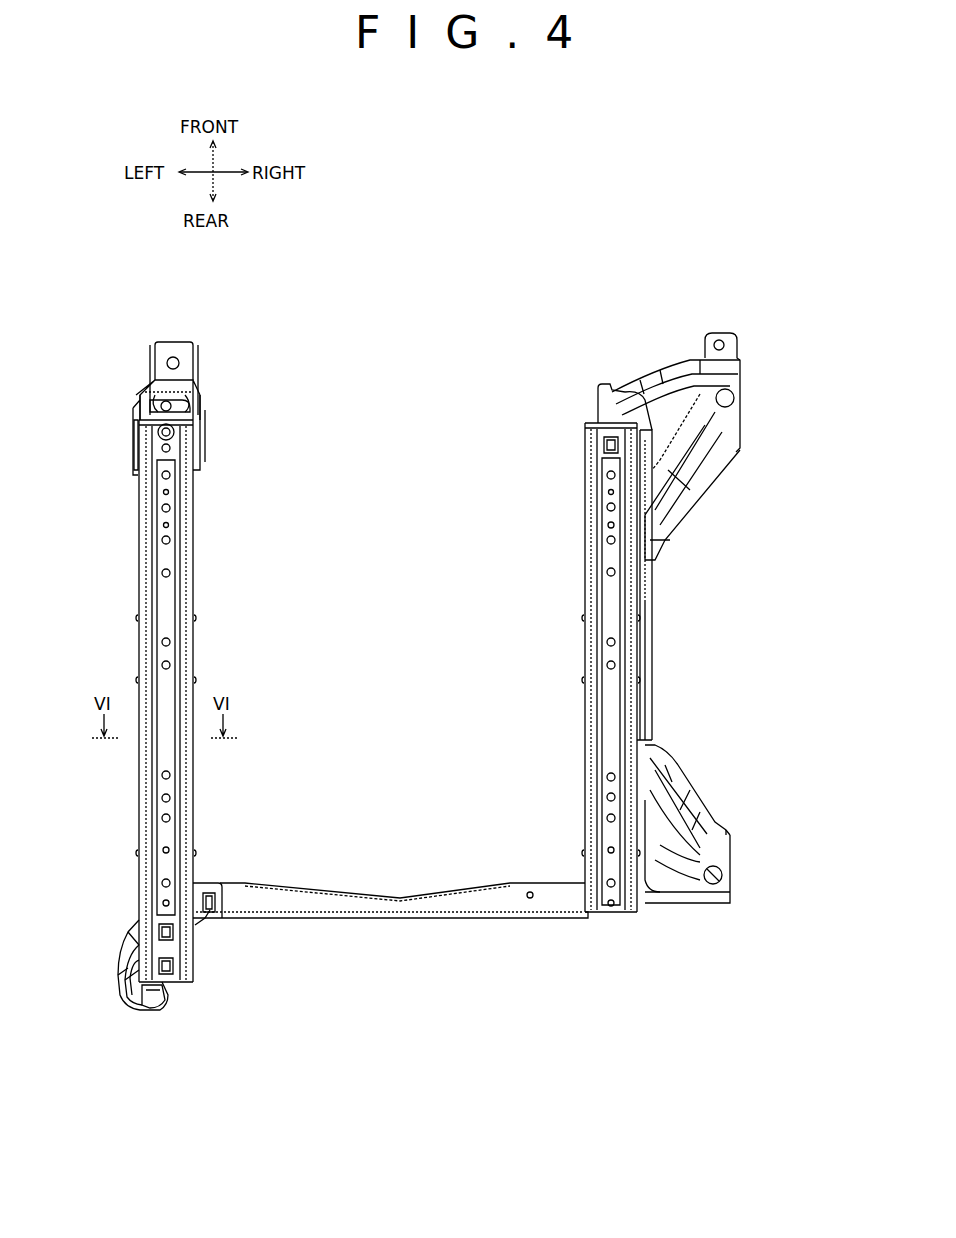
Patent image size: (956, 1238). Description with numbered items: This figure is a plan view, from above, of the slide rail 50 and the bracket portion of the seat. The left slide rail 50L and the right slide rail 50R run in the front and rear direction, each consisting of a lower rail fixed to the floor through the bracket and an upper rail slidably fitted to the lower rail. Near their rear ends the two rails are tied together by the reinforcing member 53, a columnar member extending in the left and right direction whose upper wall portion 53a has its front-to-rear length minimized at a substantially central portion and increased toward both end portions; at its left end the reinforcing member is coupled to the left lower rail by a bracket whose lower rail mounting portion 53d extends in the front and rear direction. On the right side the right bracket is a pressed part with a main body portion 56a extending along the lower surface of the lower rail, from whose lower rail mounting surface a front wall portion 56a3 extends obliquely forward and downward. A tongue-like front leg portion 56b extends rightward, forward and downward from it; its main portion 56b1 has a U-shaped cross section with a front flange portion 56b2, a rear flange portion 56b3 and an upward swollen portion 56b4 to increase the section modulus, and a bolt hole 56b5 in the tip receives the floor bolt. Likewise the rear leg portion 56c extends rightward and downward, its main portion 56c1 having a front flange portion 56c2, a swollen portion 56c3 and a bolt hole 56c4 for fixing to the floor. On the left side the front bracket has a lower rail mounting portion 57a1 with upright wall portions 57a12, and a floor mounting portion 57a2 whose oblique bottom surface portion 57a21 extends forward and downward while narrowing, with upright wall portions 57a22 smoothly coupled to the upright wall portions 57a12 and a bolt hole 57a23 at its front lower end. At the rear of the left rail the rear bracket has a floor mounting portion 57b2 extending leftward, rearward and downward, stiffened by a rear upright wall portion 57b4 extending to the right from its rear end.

The slide rail 50 is at (257, 701).
The left slide rail 50L is at (268, 780).
The right slide rail 50R is at (500, 843).
The reinforcing member 53 is at (385, 919).
The upper wall portion 53a is at (340, 896).
The lower rail mounting portion 53d is at (206, 921).
The main body portion 56a is at (635, 539).
The front wall portion 56a3 is at (600, 402).
The front leg portion 56b is at (651, 372).
The main portion 56b1 is at (740, 397).
The front flange portion 56b2 is at (652, 668).
The rear flange portion 56b3 is at (681, 545).
The swollen portion 56b4 is at (680, 478).
The bolt hole 56b5 is at (724, 418).
The rear leg portion 56c is at (660, 786).
The main portion 56c1 is at (729, 880).
The front flange portion 56c2 is at (690, 822).
The swollen portion 56c3 is at (650, 892).
The bolt hole 56c4 is at (705, 890).
The lower rail mounting portion 57a1 is at (235, 371).
The upright wall portions 57a12 is at (196, 432).
The floor mounting portion 57a2 is at (255, 357).
The oblique bottom surface portion 57a21 is at (176, 381).
The upright wall portions 57a22 is at (192, 344).
The bolt hole 57a23 is at (179, 364).
The floor mounting portion 57b2 is at (126, 985).
The rear upright wall portion 57b4 is at (150, 1010).